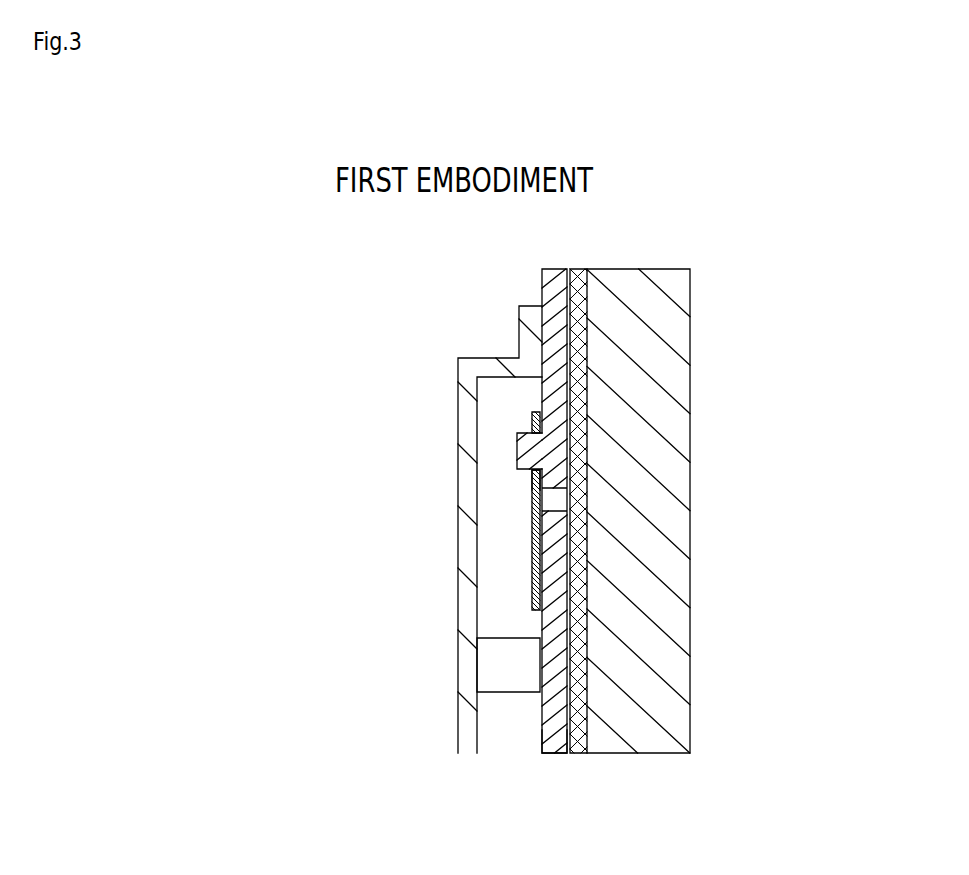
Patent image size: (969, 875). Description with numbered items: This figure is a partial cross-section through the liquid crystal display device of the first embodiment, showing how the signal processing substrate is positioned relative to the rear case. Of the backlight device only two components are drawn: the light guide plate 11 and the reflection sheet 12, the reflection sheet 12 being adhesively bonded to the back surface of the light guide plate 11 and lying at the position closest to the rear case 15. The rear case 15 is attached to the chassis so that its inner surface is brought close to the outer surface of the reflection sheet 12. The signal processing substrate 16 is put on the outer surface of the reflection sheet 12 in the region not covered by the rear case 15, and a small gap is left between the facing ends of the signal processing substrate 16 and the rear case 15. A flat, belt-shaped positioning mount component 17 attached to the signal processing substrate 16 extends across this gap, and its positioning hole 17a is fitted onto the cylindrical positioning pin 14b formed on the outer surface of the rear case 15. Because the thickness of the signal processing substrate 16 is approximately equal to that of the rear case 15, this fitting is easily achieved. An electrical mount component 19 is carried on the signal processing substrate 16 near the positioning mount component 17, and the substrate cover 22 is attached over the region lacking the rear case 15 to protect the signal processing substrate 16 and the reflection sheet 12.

The light guide plate 11 is at (669, 317).
The reflection sheet 12 is at (595, 418).
The rear case 15 is at (543, 290).
The positioning pin 14b is at (508, 448).
The signal processing substrate 16 is at (550, 740).
The substrate cover 22 is at (448, 353).
The positioning mount component 17 is at (519, 591).
The positioning hole 17a is at (515, 479).
The electrical mount component 19 is at (494, 670).